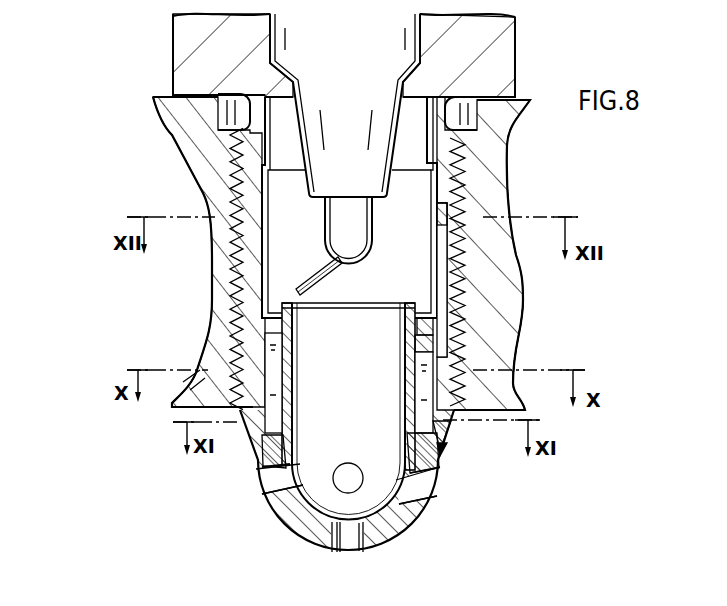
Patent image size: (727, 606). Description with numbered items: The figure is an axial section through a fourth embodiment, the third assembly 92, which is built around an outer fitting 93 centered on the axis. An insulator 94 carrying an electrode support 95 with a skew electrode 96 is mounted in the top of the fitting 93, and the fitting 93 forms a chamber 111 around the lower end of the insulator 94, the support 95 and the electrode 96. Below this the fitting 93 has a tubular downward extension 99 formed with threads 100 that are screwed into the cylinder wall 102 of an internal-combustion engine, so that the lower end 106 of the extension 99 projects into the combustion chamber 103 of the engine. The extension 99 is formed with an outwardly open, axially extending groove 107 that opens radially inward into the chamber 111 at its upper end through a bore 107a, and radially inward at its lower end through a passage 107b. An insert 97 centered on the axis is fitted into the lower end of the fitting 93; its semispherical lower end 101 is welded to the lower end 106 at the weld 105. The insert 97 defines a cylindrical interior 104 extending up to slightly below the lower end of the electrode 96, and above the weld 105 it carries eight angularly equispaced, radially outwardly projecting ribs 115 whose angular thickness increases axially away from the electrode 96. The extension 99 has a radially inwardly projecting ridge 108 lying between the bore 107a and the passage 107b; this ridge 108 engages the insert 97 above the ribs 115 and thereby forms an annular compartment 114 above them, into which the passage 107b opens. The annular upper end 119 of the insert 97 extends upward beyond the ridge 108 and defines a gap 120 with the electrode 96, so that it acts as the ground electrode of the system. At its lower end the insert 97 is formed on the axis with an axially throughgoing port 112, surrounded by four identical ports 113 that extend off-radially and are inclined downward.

The third assembly 92 is at (106, 147).
The outer fitting 93 is at (310, 32).
The insulator 94 is at (345, 105).
The electrode support 95 is at (335, 220).
The skew electrode 96 is at (315, 277).
The insert 97 is at (420, 483).
The tubular downward extension 99 is at (463, 167).
The threads 100 is at (460, 143).
The semispherical lower end 101 is at (425, 520).
The cylinder wall 102 is at (212, 330).
The combustion chamber 103 is at (156, 450).
The cylindrical interior 104 is at (273, 515).
The weld 105 is at (442, 452).
The lower end 106 is at (447, 432).
The groove 107 is at (525, 298).
The bore 107a is at (438, 217).
The passage 107b is at (523, 348).
The ridge 108 is at (427, 317).
The chamber 111 is at (431, 249).
The axially throughgoing port 112 is at (348, 543).
The ports 113 is at (357, 472).
The annular compartment 114 is at (415, 345).
The ribs 115 is at (425, 397).
The annular upper end 119 is at (257, 298).
The gap 120 is at (300, 304).